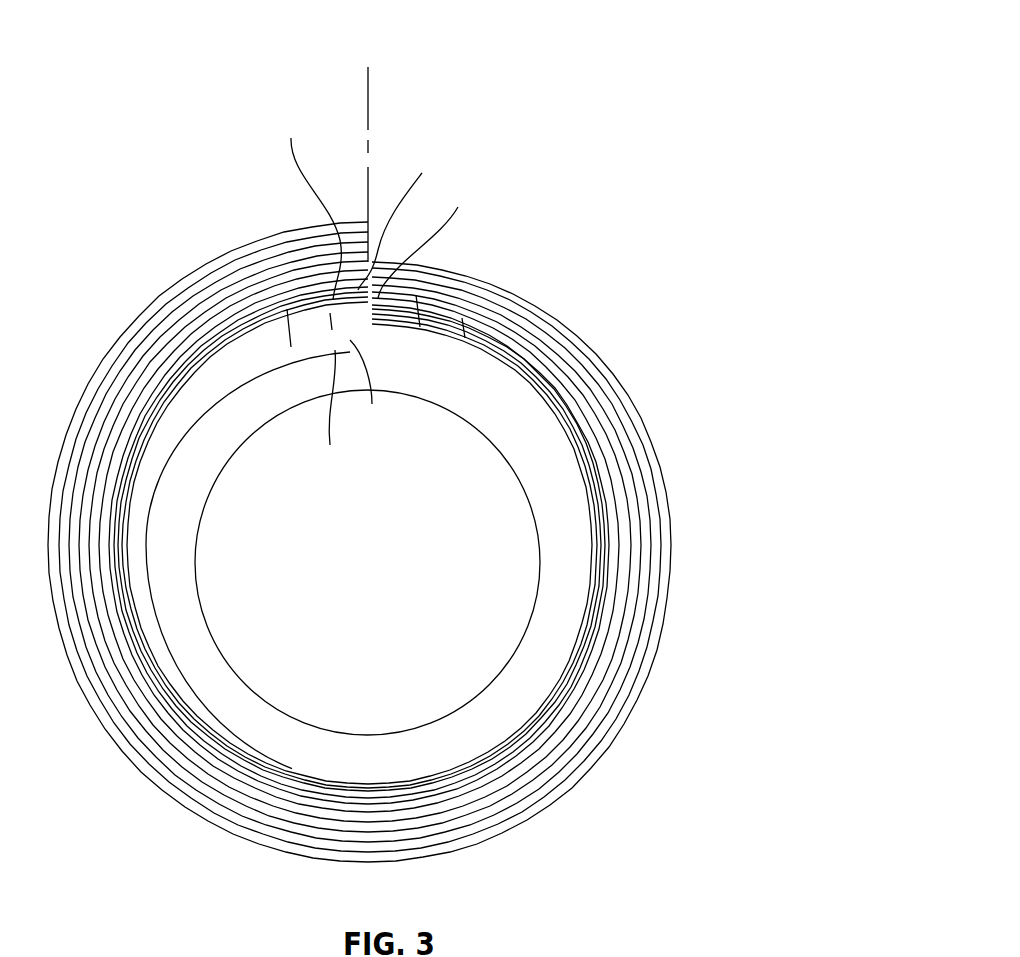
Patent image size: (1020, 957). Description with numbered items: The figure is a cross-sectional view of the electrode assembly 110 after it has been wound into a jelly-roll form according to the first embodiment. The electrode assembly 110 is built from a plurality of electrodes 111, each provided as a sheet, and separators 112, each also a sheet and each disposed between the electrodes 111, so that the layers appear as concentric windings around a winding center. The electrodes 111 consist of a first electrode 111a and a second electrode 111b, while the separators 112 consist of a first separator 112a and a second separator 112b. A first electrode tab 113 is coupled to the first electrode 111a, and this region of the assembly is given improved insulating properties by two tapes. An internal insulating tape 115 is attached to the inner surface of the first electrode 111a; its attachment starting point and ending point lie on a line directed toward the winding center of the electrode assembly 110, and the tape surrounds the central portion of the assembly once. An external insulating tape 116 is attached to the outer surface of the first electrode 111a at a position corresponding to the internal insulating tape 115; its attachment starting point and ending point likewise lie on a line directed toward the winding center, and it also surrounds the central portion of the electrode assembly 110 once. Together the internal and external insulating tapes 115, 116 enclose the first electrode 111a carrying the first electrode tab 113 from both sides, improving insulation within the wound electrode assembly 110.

The electrode assembly 110 is at (474, 438).
The electrodes 111 is at (504, 541).
The first electrode 111a is at (607, 537).
The second electrode 111b is at (620, 578).
The separators 112 is at (474, 542).
The first separator 112a is at (607, 610).
The second separator 112b is at (607, 655).
The first electrode tab 113 is at (455, 348).
The internal insulating tape 115 is at (545, 415).
The external insulating tape 116 is at (587, 463).